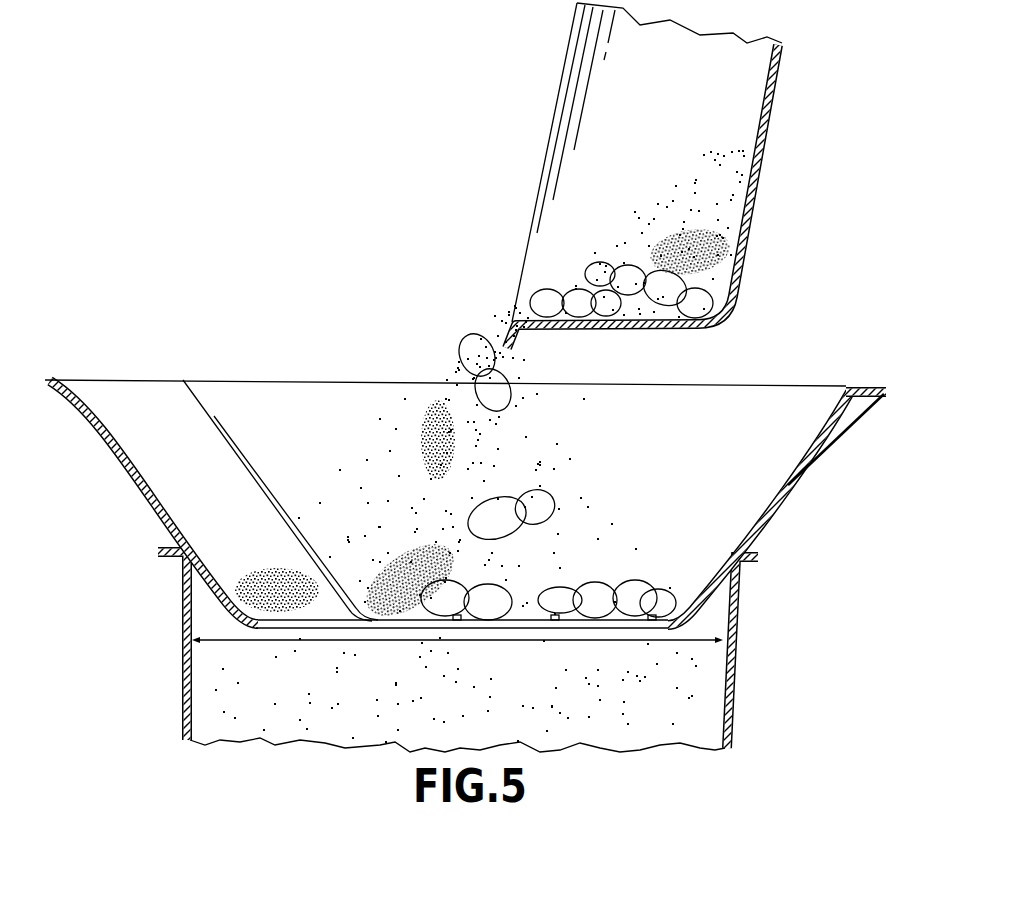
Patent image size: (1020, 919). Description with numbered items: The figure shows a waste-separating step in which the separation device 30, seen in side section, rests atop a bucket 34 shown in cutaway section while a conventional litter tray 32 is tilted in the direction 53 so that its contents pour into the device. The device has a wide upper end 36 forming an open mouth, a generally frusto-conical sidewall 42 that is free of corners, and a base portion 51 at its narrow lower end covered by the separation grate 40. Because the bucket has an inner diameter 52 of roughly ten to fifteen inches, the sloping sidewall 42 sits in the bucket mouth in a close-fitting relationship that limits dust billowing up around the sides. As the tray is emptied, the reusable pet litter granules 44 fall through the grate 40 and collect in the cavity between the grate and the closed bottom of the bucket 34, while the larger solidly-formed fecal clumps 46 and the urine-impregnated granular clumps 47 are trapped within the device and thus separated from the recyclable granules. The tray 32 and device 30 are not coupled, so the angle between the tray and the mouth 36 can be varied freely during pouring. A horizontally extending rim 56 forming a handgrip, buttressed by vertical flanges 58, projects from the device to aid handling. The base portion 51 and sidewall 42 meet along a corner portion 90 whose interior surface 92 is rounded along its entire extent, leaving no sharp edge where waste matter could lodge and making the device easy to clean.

The separation device 30 is at (466, 494).
The litter tray 32 is at (778, 117).
The bucket 34 is at (737, 677).
The wide upper end 36 is at (75, 377).
The separation grate 40 is at (309, 634).
The sidewall 42 is at (130, 468).
The reusable pet litter granules 44 is at (460, 326).
The fecal clumps 46 is at (510, 413).
The granular clumps 47 is at (425, 420).
The base portion 51 is at (667, 637).
The inner diameter 52 is at (232, 643).
The direction 53 is at (645, 175).
The rim 56 is at (866, 387).
The vertical flanges 58 is at (848, 410).
The corner portion 90 is at (702, 618).
The interior surface 92 is at (677, 614).